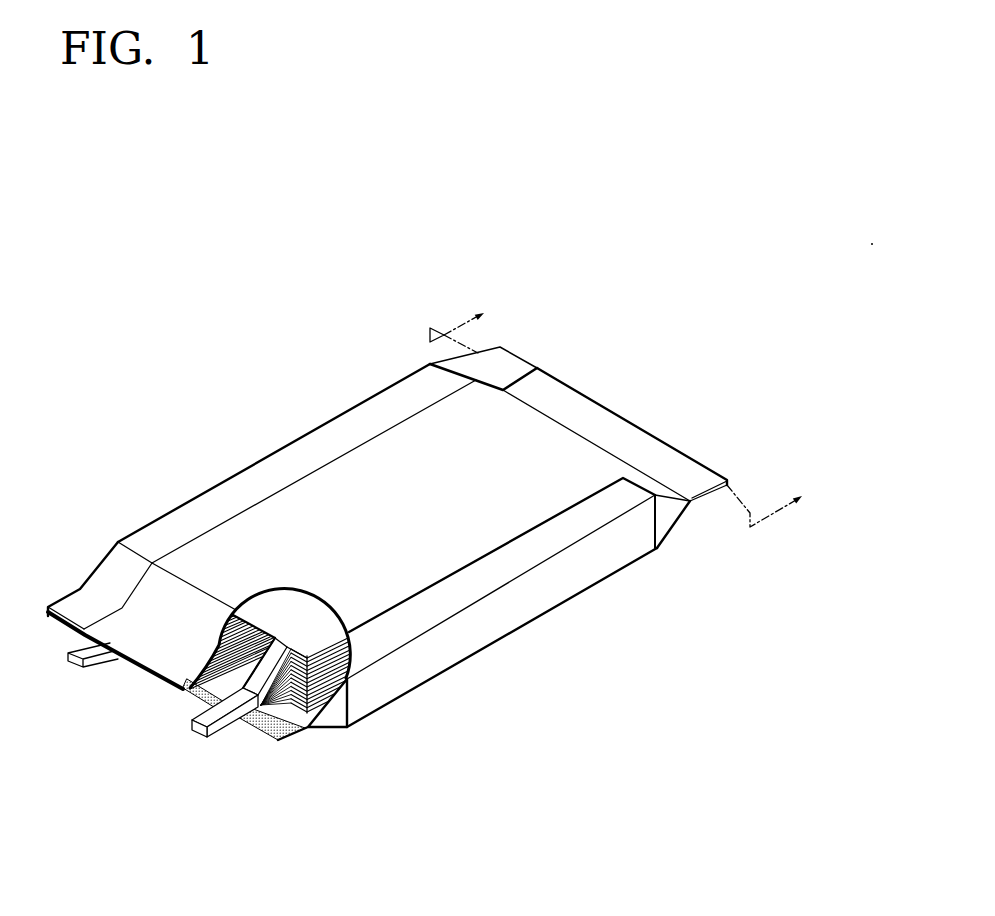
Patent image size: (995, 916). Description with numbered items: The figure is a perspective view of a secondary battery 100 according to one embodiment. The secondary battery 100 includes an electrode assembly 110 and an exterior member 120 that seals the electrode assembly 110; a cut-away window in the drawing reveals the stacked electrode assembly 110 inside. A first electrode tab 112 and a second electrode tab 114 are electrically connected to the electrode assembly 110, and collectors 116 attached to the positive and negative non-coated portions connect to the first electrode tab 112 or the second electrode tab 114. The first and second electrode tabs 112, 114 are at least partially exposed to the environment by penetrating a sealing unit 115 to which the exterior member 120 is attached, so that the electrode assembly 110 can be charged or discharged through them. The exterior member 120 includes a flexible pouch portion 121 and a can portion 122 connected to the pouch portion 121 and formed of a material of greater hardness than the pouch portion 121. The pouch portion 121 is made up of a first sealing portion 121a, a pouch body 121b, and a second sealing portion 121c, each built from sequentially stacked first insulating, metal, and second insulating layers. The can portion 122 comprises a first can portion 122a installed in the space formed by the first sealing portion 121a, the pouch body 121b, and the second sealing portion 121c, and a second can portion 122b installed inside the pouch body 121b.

The secondary battery 100 is at (158, 362).
The electrode assembly 110 is at (294, 628).
The first electrode tab 112 is at (74, 668).
The second electrode tab 114 is at (197, 735).
The sealing unit 115 is at (192, 698).
The collectors 116 is at (260, 694).
The exterior member 120 is at (335, 345).
The pouch portion 121 is at (413, 479).
The first sealing portion 121a is at (694, 443).
The pouch body 121b is at (393, 578).
The second sealing portion 121c is at (126, 668).
The can portion 122 is at (280, 383).
The first can portion 122a is at (212, 505).
The second can portion 122b is at (447, 600).